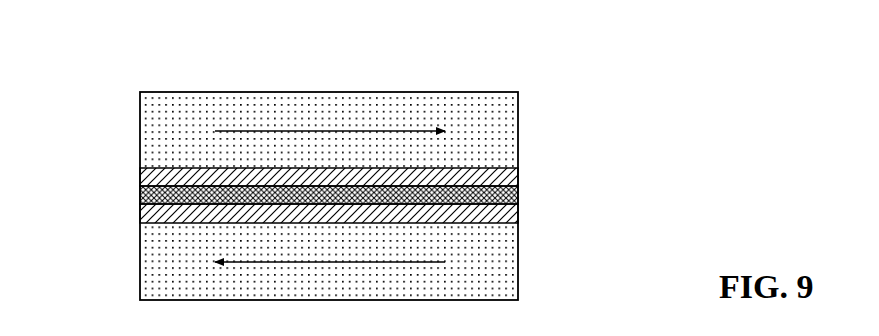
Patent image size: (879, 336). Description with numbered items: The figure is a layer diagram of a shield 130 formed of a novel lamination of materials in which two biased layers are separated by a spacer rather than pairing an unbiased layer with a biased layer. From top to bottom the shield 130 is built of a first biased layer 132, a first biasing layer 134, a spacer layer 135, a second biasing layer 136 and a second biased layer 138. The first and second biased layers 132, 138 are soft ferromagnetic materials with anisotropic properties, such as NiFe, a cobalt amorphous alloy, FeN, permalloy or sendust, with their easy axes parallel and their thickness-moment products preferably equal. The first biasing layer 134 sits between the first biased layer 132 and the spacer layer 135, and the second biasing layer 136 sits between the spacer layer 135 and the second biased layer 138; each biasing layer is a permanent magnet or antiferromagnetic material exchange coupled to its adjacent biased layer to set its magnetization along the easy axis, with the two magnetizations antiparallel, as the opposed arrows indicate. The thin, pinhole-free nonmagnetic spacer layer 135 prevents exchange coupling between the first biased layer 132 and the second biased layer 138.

The shield 130 is at (92, 83).
The first biased layer 132 is at (498, 131).
The first biasing layer 134 is at (498, 179).
The spacer layer 135 is at (498, 197).
The second biasing layer 136 is at (498, 214).
The second biased layer 138 is at (498, 265).